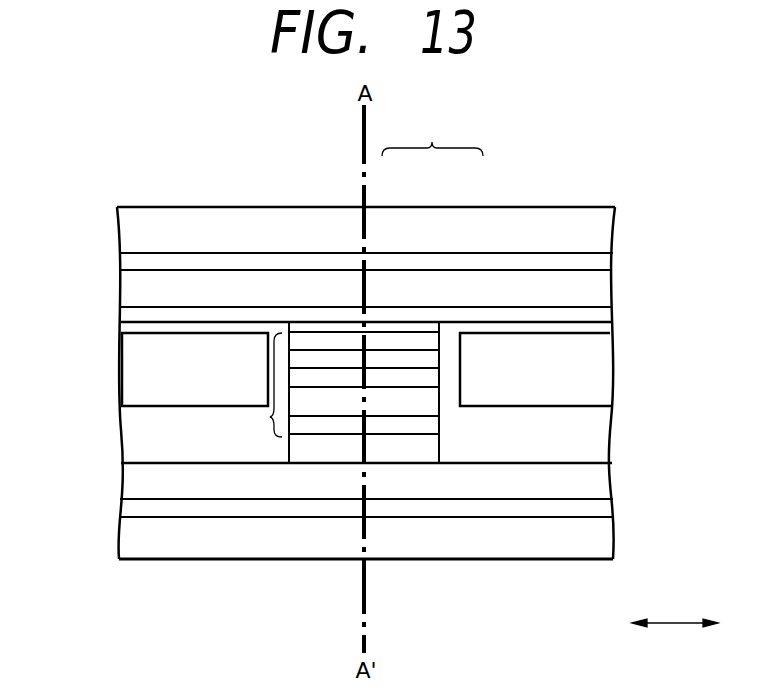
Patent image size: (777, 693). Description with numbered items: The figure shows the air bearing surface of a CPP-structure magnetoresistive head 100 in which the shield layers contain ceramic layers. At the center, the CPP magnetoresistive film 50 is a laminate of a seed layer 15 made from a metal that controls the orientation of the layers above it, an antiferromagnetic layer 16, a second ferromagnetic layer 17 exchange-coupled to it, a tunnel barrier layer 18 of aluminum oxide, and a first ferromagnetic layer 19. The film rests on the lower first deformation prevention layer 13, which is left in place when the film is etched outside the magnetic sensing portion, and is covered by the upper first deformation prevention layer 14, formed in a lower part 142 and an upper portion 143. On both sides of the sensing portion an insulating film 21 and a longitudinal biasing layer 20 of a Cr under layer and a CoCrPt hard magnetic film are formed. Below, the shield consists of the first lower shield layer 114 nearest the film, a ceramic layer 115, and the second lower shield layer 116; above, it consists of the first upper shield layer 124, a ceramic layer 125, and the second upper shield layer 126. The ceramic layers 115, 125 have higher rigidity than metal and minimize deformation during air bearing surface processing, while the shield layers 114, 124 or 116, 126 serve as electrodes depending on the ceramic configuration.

The lower first deformation prevention layer 13 is at (305, 455).
The upper first deformation prevention layer 14 is at (432, 137).
The seed layer 15 is at (334, 430).
The antiferromagnetic layer 16 is at (381, 407).
The second ferromagnetic layer 17 is at (419, 377).
The tunnel barrier layer 18 is at (305, 358).
The first ferromagnetic layer 19 is at (340, 338).
The longitudinal biasing layer 20 is at (120, 372).
The insulating film 21 is at (120, 329).
The CPP magnetoresistive film 50 is at (268, 417).
The device 100 is at (677, 620).
The first lower shield layer 114 is at (125, 478).
The ceramic layer 115 is at (125, 514).
The second lower shield layer 116 is at (125, 545).
The first upper shield layer 124 is at (120, 291).
The ceramic layer 125 is at (120, 256).
The second upper shield layer 126 is at (120, 223).
The lower part of the upper first deformation prevention layer 142 is at (413, 327).
The upper portion of the upper first deformation prevention layer 143 is at (468, 310).